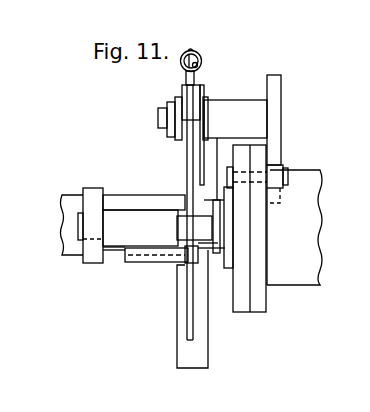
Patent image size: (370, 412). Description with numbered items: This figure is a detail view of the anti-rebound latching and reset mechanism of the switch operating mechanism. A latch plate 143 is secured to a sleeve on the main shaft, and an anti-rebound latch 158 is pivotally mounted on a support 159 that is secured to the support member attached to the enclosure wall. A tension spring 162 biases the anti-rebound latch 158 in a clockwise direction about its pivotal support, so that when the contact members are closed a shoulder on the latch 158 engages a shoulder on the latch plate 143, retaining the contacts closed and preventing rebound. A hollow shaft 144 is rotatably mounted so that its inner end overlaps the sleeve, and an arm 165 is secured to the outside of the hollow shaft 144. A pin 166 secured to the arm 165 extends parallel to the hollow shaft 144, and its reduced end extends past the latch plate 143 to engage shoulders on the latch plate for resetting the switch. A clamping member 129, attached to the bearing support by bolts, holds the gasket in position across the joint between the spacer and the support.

The tension spring 162 is at (200, 57).
The anti-rebound latch 158 is at (186, 97).
The support 159 is at (231, 109).
The latch plate 143 is at (187, 163).
The arm 165 is at (93, 188).
The hollow shaft 144 is at (73, 255).
The pin 166 is at (118, 238).
The clamping member 129 is at (242, 313).